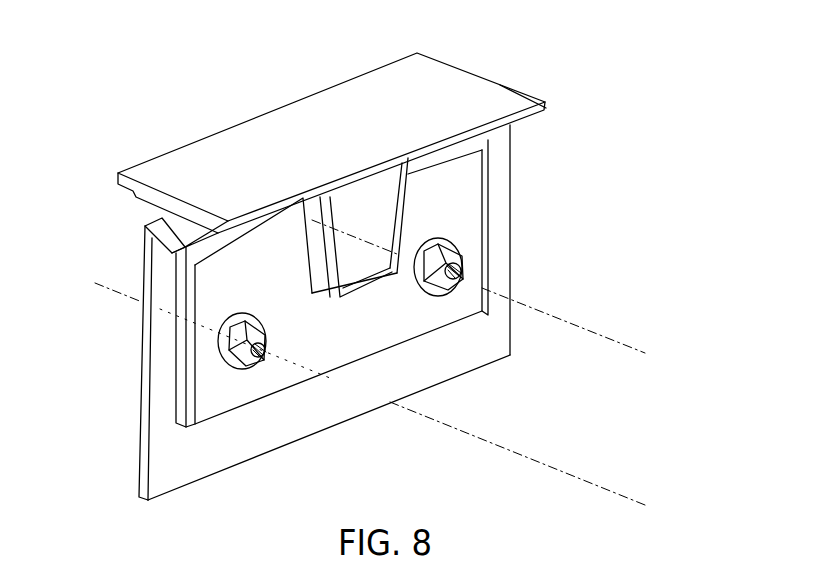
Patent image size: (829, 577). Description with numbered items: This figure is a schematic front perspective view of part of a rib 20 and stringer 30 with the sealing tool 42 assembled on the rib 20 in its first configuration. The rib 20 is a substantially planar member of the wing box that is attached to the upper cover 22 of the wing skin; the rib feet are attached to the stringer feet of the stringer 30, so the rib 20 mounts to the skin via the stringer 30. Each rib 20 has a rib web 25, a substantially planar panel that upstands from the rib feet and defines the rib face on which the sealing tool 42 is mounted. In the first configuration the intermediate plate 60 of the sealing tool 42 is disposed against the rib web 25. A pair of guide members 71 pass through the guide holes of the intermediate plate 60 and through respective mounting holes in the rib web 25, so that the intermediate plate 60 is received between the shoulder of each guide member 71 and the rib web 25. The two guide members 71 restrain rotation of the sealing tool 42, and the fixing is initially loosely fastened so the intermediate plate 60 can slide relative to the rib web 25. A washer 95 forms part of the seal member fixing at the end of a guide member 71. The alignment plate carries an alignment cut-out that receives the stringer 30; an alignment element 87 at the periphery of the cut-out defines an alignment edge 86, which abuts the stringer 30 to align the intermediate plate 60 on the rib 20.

The rib 20 is at (143, 377).
The upper cover 22 is at (462, 90).
The rib web 25 is at (205, 460).
The stringer 30 is at (380, 188).
The sealing tool 42 is at (536, 208).
The intermediate plate 60 is at (482, 225).
The guide member 71 is at (266, 349).
The alignment edge 86 is at (309, 286).
The alignment element 87 is at (291, 225).
The washer 95 is at (238, 318).